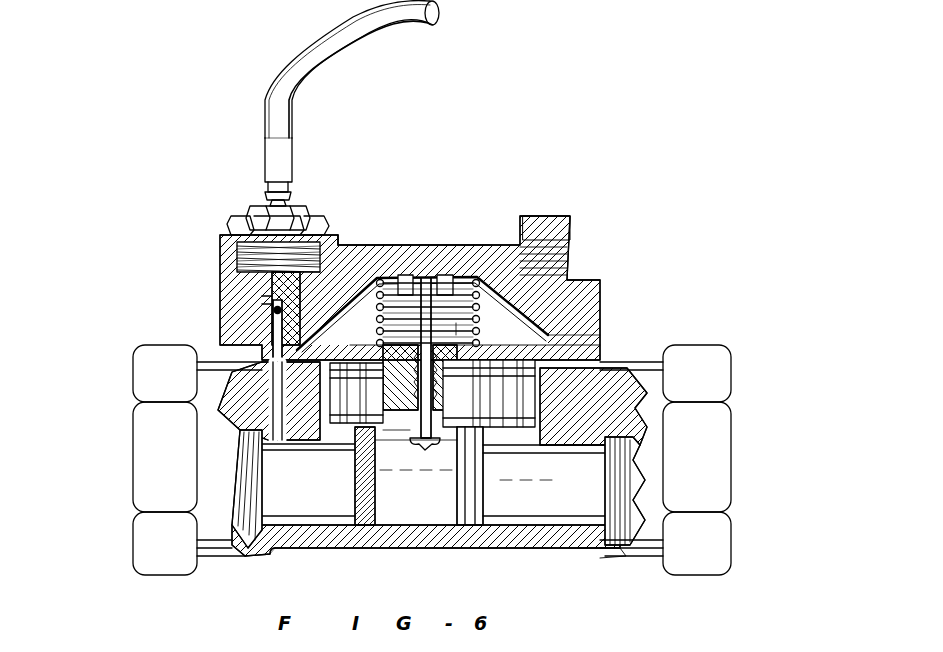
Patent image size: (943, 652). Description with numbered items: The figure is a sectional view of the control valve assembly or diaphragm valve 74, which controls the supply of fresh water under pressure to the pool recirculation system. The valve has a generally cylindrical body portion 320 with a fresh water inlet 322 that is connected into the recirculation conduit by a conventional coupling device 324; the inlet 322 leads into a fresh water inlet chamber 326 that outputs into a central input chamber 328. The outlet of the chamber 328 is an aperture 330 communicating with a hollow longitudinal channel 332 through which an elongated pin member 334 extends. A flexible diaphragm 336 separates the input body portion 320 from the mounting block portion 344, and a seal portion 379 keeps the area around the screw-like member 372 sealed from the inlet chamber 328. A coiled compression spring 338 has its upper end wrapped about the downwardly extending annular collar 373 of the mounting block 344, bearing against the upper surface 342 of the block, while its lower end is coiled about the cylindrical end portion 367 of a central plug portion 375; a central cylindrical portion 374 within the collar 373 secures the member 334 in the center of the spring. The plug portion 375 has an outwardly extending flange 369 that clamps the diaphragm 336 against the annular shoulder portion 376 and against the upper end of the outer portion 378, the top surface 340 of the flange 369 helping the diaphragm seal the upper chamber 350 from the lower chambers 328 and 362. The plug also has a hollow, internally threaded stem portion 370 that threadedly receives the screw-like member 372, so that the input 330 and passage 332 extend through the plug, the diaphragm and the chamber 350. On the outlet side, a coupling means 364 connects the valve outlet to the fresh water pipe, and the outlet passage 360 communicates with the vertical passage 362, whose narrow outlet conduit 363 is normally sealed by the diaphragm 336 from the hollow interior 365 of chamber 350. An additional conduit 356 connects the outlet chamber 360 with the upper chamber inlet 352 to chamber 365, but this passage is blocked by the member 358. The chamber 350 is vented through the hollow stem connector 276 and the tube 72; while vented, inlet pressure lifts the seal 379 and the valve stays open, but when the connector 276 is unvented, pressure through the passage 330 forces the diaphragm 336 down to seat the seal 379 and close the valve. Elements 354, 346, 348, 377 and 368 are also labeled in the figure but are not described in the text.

The conduit or tube 72 is at (334, 42).
The control valve assembly or diaphragm valve 74 is at (524, 146).
The hollow stem connector 276 is at (292, 190).
The bonnet assembly 354 is at (215, 197).
The upper chamber inlet 352 is at (236, 256).
The blocking member 358 is at (262, 298).
The hollow interior of the chamber 365 is at (272, 312).
The narrow outlet conduit 363 is at (272, 340).
The coupling means 364 is at (158, 345).
The upper surface of the mounting block 342 is at (348, 258).
The coiled compression spring 338 is at (370, 270).
The mounting block portion 344 is at (425, 270).
The central cylindrical portion 374 is at (414, 285).
The elongated pin member 334 is at (447, 292).
The cap 346 is at (575, 228).
The threaded boss 348 is at (568, 250).
The upper chamber 350 is at (560, 305).
The flexible diaphragm 336 is at (578, 334).
The body shoulder 377 is at (610, 367).
The cylindrical end portion 367 is at (486, 317).
The hollow longitudinal interior channel 332 is at (474, 320).
The annular collar 373 is at (337, 314).
The top surface of the flange 340 is at (270, 401).
The outer portion 378 is at (593, 406).
The outwardly-extending flange portion 369 is at (538, 362).
The aperture 330 is at (450, 446).
The central or plug portion 375 is at (350, 425).
The internally-threaded stem portion 370 is at (365, 440).
The screw-like member 372 is at (390, 482).
The seal member 379 is at (376, 432).
The central input chamber 328 is at (432, 548).
The generally cylindrical portion 320 is at (528, 548).
The vertical passage 362 is at (332, 548).
The drain port 368 is at (383, 548).
The additional conduit or pipe 356 is at (242, 432).
The fresh water inlet chamber 326 is at (578, 520).
The annular shoulder portion 376 is at (222, 418).
The outlet passage 360 is at (126, 446).
The fresh water inlet 322 is at (742, 436).
The coupling device 324 is at (693, 570).